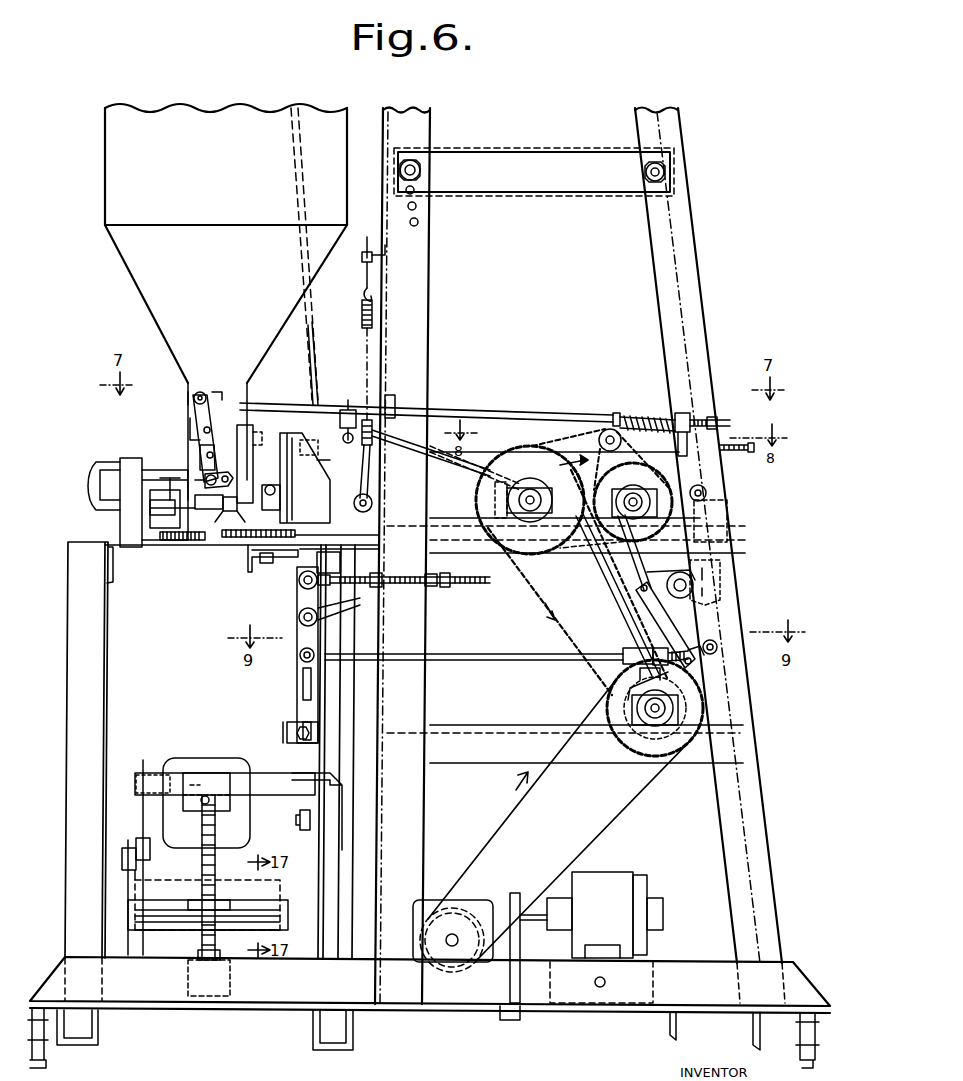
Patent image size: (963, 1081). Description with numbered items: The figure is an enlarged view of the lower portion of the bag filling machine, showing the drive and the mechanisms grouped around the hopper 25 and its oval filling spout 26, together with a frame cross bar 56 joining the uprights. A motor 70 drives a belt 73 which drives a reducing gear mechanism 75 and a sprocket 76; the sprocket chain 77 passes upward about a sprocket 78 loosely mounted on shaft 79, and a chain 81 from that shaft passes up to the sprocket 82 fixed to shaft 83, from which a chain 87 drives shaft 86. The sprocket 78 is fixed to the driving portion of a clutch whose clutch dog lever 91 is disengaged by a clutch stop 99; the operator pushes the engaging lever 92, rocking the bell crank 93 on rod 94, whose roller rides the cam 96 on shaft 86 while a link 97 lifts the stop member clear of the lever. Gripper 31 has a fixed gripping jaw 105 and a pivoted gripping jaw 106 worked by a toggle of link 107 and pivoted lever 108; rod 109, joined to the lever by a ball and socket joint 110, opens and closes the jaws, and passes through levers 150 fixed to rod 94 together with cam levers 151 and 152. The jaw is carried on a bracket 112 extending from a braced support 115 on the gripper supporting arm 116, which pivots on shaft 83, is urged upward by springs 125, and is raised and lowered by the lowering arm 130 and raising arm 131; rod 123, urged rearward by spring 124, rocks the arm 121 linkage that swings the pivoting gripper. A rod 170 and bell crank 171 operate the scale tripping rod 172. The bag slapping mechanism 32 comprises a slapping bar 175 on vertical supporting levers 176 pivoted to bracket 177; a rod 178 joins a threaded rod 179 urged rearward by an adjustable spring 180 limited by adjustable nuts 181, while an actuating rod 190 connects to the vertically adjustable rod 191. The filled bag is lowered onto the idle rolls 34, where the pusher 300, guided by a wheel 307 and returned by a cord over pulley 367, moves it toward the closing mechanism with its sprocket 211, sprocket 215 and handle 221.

The hopper 25 is at (226, 302).
The cross bar 56 is at (528, 182).
The scale tripping rod 172 is at (318, 333).
The springs 125 is at (373, 318).
The bell crank 171 is at (338, 421).
The gripper supporting arm 116 is at (352, 490).
The rod 109 is at (450, 410).
The levers 150 is at (680, 410).
The spring 124 is at (730, 456).
The sprocket 82 is at (527, 462).
The shaft 83 is at (532, 506).
The lowering arm 130 is at (600, 447).
The chain 87 is at (645, 472).
The shaft 86 is at (632, 494).
The cam 96 is at (675, 485).
The bell crank 93 is at (694, 490).
The chain 81 is at (548, 600).
The raising arm 131 is at (590, 557).
The cam lever 152 is at (640, 567).
The link 97 is at (670, 635).
The rod 94 is at (700, 598).
The cam lever 151 is at (712, 508).
The clutch stop 99 is at (666, 650).
The actuating rod 190 is at (453, 662).
The sprocket 78 is at (705, 712).
The shaft 79 is at (660, 718).
The clutch dog lever 91 is at (640, 683).
The sprocket chain 77 is at (520, 790).
The reducing gear mechanism 75 is at (478, 900).
The sprocket 76 is at (452, 940).
The belt 73 is at (517, 892).
The motor 70 is at (612, 880).
The gripper 31 is at (175, 426).
The ball and socket joint 110 is at (194, 394).
The pivoted lever 108 is at (192, 431).
The filling spout 26 is at (200, 458).
The link 107 is at (204, 477).
The handle 221 is at (92, 468).
The pivoted gripping jaw 106 is at (196, 505).
The fixed gripping jaw 105 is at (225, 508).
The sprocket 215 is at (204, 542).
The sprocket 211 is at (232, 548).
The engaging lever 92 is at (250, 568).
The bracket 112 is at (268, 430).
The braced support 115 is at (300, 455).
The arm 121 is at (270, 496).
The rod 170 is at (468, 462).
The rod 123 is at (480, 452).
The vertical supporting levers 176 is at (318, 695).
The rod 178 is at (297, 582).
The bracket 177 is at (322, 620).
The vertically adjustable rod 191 is at (300, 658).
The adjustable nuts 181 is at (340, 568).
The adjustable spring 180 is at (430, 590).
The threaded rod 179 is at (455, 588).
The slapping bar 175 is at (283, 725).
The bag slapping mechanism 32 is at (284, 710).
The pusher 300 is at (195, 758).
The wheel 307 is at (128, 838).
The idle rolls 34 is at (168, 888).
The pulley 367 is at (300, 823).